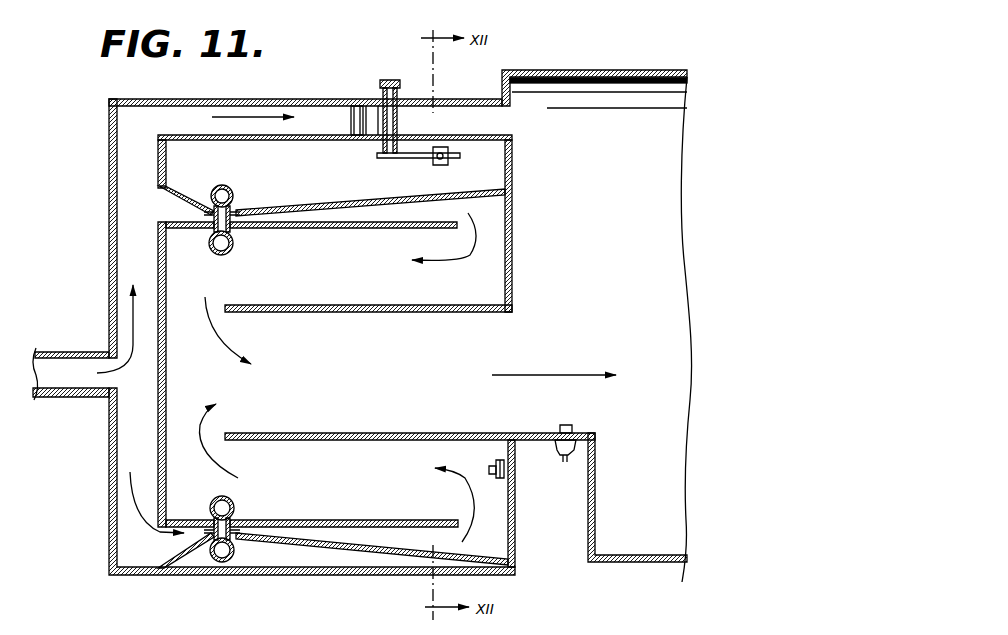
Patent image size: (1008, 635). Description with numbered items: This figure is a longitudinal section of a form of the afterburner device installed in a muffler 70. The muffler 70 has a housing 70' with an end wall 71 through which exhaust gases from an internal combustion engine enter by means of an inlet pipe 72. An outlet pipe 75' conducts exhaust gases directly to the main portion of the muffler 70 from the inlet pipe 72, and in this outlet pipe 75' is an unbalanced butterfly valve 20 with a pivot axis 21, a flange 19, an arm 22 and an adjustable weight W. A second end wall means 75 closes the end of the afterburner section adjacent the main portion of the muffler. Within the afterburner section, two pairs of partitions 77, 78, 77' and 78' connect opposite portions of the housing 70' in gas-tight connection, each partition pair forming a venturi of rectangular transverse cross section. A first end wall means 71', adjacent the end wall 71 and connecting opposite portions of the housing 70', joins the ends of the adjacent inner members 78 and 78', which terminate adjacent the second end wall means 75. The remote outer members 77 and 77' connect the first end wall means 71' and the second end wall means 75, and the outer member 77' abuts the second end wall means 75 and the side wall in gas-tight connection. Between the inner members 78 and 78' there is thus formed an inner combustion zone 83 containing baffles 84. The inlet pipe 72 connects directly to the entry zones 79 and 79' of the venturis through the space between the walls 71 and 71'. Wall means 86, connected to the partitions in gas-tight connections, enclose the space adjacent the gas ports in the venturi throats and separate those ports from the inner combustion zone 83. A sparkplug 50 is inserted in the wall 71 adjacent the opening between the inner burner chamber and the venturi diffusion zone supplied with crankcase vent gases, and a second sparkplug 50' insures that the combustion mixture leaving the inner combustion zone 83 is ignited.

The flange 19 is at (357, 141).
The unbalanced butterfly valve 20 is at (372, 130).
The pivot axis 21 is at (397, 116).
The arm 22 is at (415, 158).
The adjustable weight W is at (441, 164).
The sparkplug 50 is at (518, 462).
The second sparkplug 50' is at (565, 460).
The muffler 70 is at (597, 341).
The housing 70' is at (637, 513).
The end wall 71 is at (296, 337).
The first end wall means 71' is at (203, 436).
The inlet pipe 72 is at (70, 398).
The second end wall means 75 is at (353, 340).
The outlet pipe 75' is at (305, 88).
The partition 77 is at (370, 198).
The partition 77' is at (372, 565).
The partition 78 is at (311, 237).
The partition 78' is at (312, 508).
The entry zone 79 is at (199, 224).
The entry zone 79' is at (199, 529).
The inner combustion zone 83 is at (510, 379).
The baffles 84 is at (348, 422).
The wall means 86 is at (232, 192).